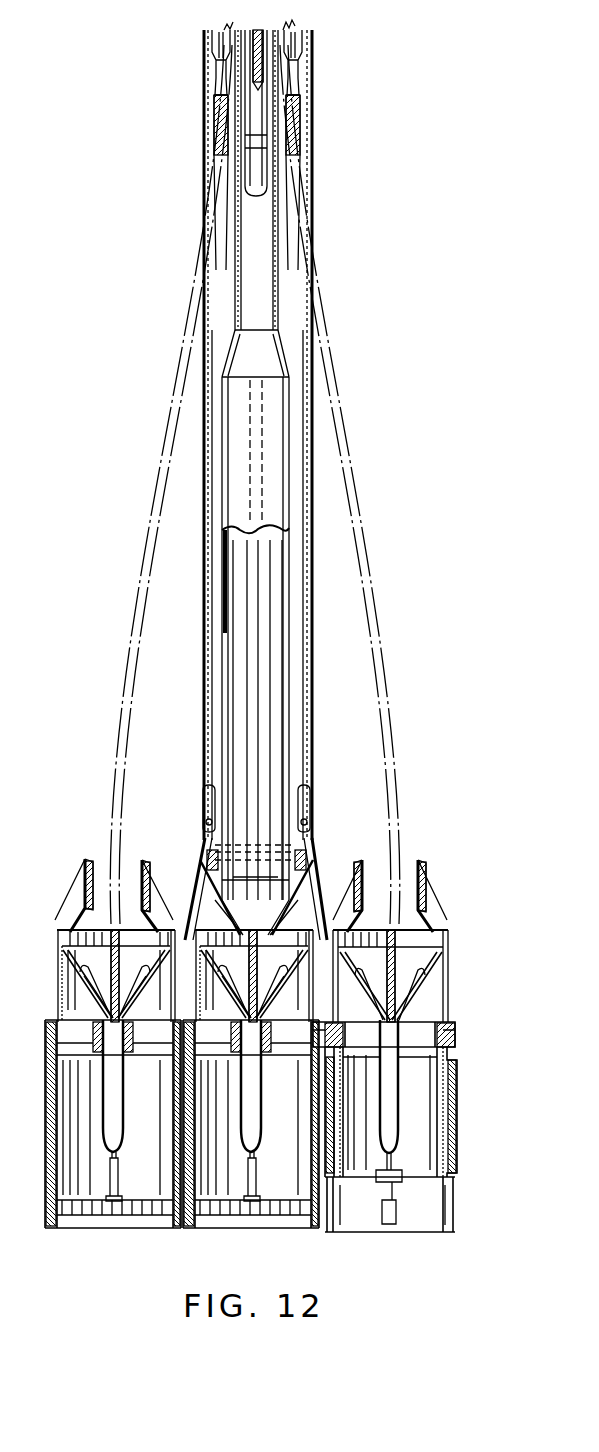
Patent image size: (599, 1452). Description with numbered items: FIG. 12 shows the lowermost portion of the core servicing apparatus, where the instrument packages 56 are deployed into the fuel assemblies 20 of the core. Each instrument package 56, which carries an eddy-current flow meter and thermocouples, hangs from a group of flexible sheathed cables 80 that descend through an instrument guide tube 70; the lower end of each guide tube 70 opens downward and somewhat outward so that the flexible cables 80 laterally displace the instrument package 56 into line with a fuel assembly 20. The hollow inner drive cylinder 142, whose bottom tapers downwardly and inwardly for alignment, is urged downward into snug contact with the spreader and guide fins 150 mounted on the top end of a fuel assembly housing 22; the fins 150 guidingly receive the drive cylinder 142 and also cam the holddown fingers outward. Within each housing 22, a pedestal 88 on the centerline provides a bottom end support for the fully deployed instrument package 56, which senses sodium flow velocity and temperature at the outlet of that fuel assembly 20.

The fuel assembly 20 is at (318, 1006).
The fuel assembly housing 22 is at (448, 1013).
The instrument package 56 is at (106, 1112).
The instrument guide tube 70 is at (200, 92).
The cable 80 is at (266, 58).
The pedestal 88 is at (109, 1158).
The inner drive cylinder 142 is at (268, 348).
The spreader and guide fins 150 is at (80, 862).